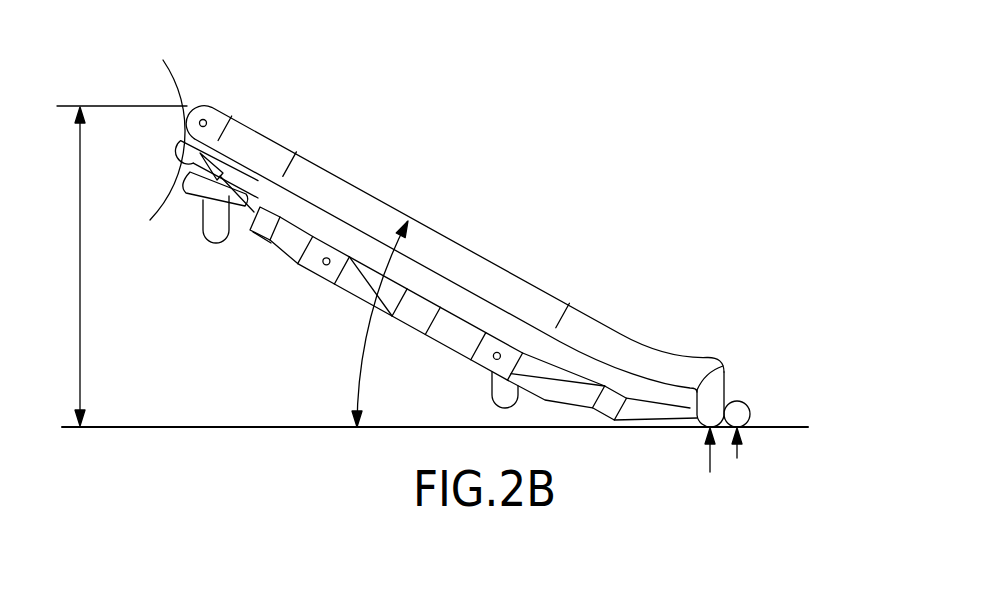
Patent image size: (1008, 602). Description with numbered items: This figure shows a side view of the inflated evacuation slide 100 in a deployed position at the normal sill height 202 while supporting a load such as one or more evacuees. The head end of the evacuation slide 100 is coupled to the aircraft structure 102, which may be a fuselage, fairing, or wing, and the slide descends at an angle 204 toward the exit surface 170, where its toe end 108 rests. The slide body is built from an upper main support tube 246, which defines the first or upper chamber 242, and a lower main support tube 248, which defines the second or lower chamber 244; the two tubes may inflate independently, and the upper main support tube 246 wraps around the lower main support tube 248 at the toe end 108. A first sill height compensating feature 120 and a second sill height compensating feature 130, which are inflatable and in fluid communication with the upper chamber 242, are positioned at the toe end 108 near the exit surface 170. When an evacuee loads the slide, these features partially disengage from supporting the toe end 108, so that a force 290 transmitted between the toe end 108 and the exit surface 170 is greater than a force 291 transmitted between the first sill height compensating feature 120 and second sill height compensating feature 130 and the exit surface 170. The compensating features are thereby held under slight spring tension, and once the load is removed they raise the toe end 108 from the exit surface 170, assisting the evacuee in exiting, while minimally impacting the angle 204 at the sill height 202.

The evacuation slide 100 is at (520, 266).
The aircraft structure 102 is at (172, 70).
The toe end 108 is at (726, 383).
The first sill height compensating feature 120 is at (794, 407).
The second sill height compensating feature 130 is at (752, 410).
The exit surface 170 is at (173, 424).
The sill height 202 is at (122, 266).
The angle 204 is at (365, 352).
The first chamber 242 is at (432, 240).
The second chamber 244 is at (370, 255).
The upper main support tube 246 is at (443, 252).
The lower main support tube 248 is at (360, 255).
The force 290 is at (703, 465).
The force 291 is at (743, 458).